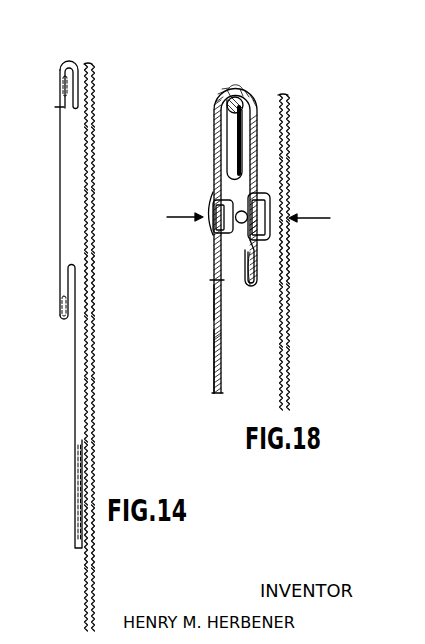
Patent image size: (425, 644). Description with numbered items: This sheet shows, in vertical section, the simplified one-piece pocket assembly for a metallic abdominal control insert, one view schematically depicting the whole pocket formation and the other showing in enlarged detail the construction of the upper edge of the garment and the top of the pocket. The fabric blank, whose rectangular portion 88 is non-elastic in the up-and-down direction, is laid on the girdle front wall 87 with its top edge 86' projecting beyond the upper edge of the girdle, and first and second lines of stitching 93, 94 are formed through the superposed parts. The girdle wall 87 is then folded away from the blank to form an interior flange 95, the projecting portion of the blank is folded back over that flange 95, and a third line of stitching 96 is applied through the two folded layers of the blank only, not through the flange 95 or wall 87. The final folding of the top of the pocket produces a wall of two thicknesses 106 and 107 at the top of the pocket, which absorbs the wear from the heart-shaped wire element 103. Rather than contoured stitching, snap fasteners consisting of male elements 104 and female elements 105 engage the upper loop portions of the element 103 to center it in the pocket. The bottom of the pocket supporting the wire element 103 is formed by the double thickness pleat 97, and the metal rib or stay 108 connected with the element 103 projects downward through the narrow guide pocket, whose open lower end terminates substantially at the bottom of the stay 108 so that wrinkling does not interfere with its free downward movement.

In FIG. 18, the top edge of the blank 86' is at (232, 304).
In FIG. 14, the girdle front wall 87 is at (92, 362).
In FIG. 18, the girdle front wall 87 is at (285, 378).
In FIG. 14, the rectangular portion 88 is at (59, 191).
In FIG. 18, the rectangular portion 88 is at (212, 362).
In FIG. 14, the first line of stitching 93 is at (92, 103).
In FIG. 18, the first line of stitching 93 is at (283, 284).
In FIG. 14, the second line of stitching 94 is at (86, 70).
In FIG. 18, the second line of stitching 94 is at (272, 100).
In FIG. 18, the interior flange 95 is at (262, 252).
In FIG. 14, the third line of stitching 96 is at (59, 108).
In FIG. 18, the third line of stitching 96 is at (213, 280).
In FIG. 14, the pleat 97 is at (59, 318).
In FIG. 14, the heart-shaped wire element 103 is at (63, 93).
In FIG. 18, the heart-shaped wire element 103 is at (243, 100).
In FIG. 18, the male snap fastener element 104 is at (258, 215).
In FIG. 18, the female snap fastener element 105 is at (207, 222).
In FIG. 18, the first wall thickness 106 is at (220, 95).
In FIG. 18, the second wall thickness 107 is at (238, 88).
In FIG. 14, the metal rib or stay 108 is at (76, 491).